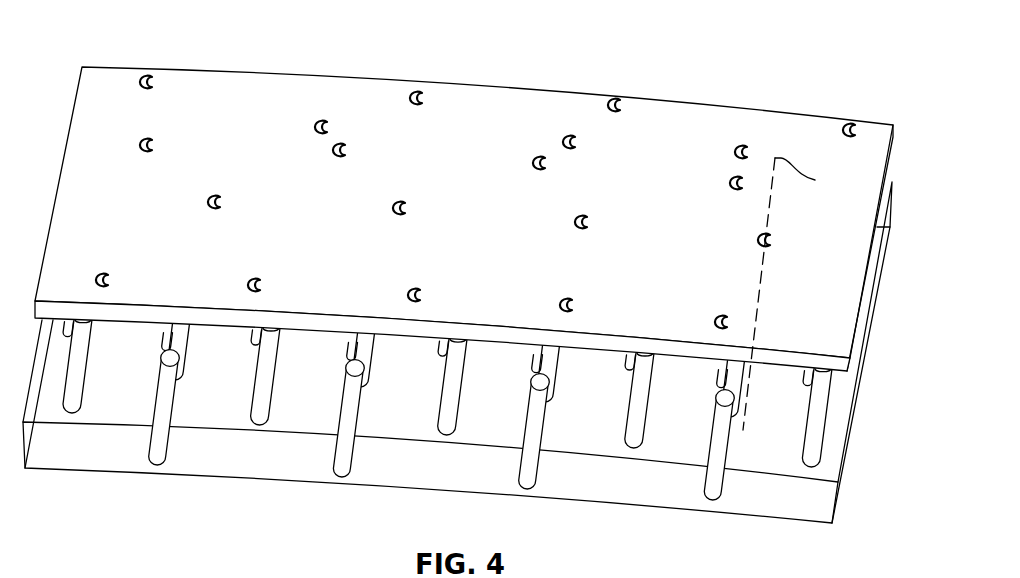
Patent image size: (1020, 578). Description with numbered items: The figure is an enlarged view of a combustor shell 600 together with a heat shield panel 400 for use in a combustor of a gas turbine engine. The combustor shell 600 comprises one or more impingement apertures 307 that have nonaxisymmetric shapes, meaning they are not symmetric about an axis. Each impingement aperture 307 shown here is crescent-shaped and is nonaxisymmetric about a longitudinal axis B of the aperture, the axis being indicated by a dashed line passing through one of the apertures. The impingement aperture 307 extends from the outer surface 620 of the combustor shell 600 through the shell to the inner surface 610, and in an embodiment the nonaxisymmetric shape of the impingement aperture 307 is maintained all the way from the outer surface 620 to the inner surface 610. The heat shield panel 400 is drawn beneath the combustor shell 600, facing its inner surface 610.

The base block 400 is at (818, 490).
The pins 610 is at (797, 377).
The top plate 600 is at (479, 248).
The plate side edge 620 is at (767, 350).
The crescent-shaped holes 307 is at (768, 245).